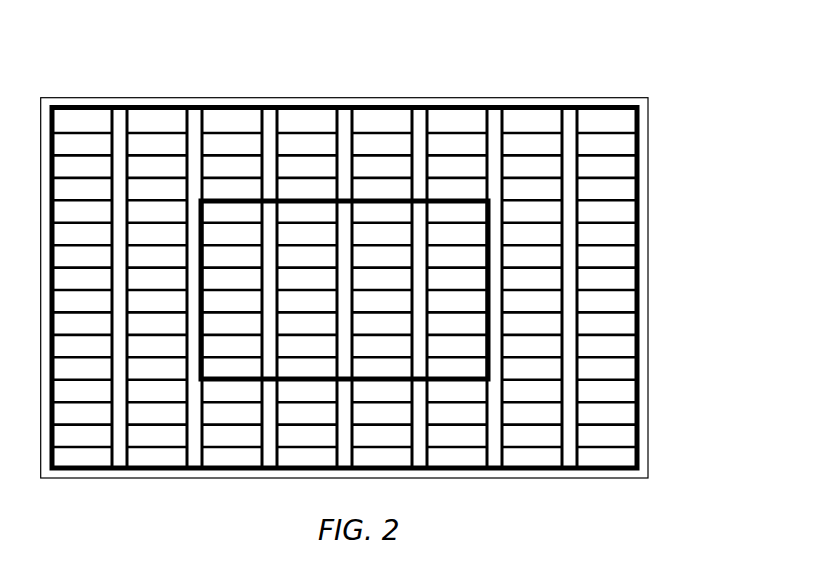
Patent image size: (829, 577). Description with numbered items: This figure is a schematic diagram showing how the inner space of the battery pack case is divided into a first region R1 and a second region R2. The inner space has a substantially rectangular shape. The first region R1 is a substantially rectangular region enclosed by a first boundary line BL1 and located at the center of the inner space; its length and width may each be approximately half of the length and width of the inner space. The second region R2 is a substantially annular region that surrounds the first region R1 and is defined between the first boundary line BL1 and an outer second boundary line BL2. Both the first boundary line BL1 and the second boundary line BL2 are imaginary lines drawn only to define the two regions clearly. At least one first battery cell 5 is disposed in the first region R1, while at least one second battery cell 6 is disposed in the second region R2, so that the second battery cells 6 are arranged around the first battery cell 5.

The first battery cell 5 is at (377, 232).
The second battery cell 6 is at (171, 143).
The first region R1 is at (477, 202).
The second region R2 is at (403, 248).
The first boundary line BL1 is at (490, 280).
The second boundary line BL2 is at (640, 235).